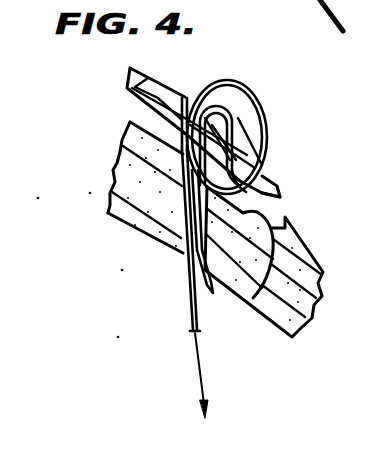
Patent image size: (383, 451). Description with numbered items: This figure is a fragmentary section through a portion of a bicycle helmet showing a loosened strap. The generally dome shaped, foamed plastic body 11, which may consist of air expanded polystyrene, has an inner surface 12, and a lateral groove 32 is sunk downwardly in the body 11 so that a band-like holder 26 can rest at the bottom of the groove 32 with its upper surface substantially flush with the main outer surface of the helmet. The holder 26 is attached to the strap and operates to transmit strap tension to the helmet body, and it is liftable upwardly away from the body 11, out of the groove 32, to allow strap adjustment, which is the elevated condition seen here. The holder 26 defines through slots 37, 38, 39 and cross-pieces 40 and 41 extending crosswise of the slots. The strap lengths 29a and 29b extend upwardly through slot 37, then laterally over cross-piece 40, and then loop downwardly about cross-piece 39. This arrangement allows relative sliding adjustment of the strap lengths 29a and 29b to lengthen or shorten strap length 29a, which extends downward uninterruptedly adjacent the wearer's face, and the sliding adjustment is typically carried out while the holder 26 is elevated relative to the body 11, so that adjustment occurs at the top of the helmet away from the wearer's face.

The foamed plastic body 11 is at (110, 183).
The inner surface 12 is at (138, 229).
The holder 26 is at (127, 89).
The strap length 29a is at (184, 300).
The strap length 29b is at (212, 295).
The lateral groove 32 is at (251, 298).
The through slot 37 is at (186, 98).
The through slot 38 is at (245, 134).
The cross-piece 39 is at (266, 190).
The cross-piece 40 is at (243, 94).
The cross-piece 41 is at (238, 172).